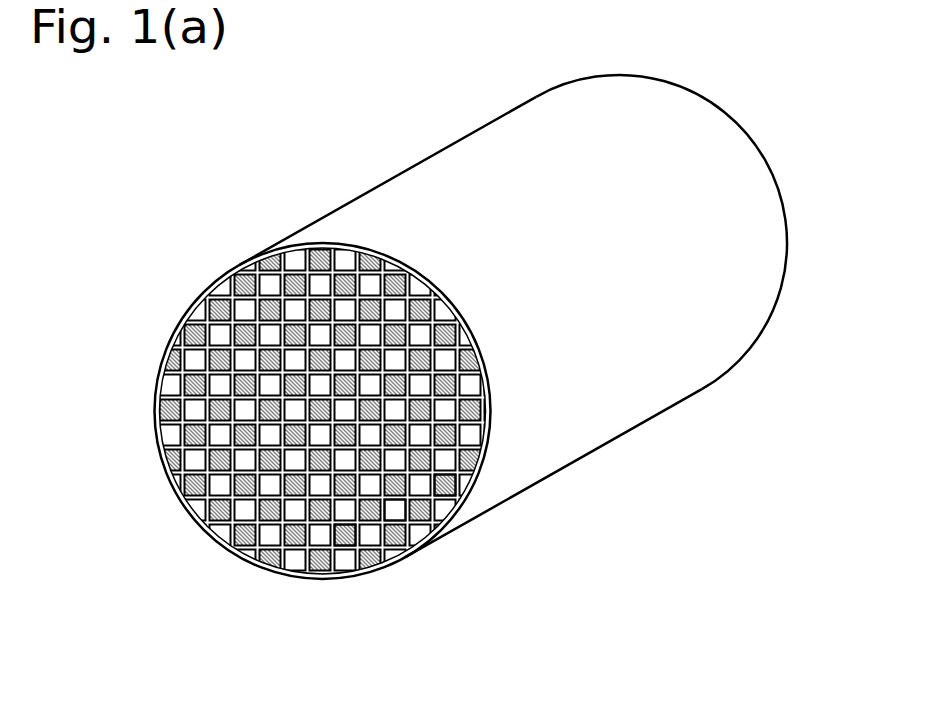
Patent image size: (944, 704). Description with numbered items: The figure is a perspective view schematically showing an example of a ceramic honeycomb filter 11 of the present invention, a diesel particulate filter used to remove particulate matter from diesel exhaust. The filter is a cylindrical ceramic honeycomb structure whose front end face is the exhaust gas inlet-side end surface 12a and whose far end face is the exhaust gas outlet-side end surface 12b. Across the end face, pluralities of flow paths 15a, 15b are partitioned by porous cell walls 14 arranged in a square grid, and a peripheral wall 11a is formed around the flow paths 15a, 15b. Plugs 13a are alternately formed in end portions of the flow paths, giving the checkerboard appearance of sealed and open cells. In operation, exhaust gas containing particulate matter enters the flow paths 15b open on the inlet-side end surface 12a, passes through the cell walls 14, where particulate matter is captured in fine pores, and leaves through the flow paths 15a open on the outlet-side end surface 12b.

The ceramic honeycomb filter 11 is at (212, 253).
The peripheral wall 11a is at (425, 278).
The exhaust gas inlet-side end surface 12a is at (191, 531).
The exhaust gas outlet-side end surface 12b is at (779, 161).
The plug 13a is at (347, 537).
The cell wall 14 is at (282, 532).
The flow path 15a is at (447, 495).
The flow path 15b is at (397, 512).